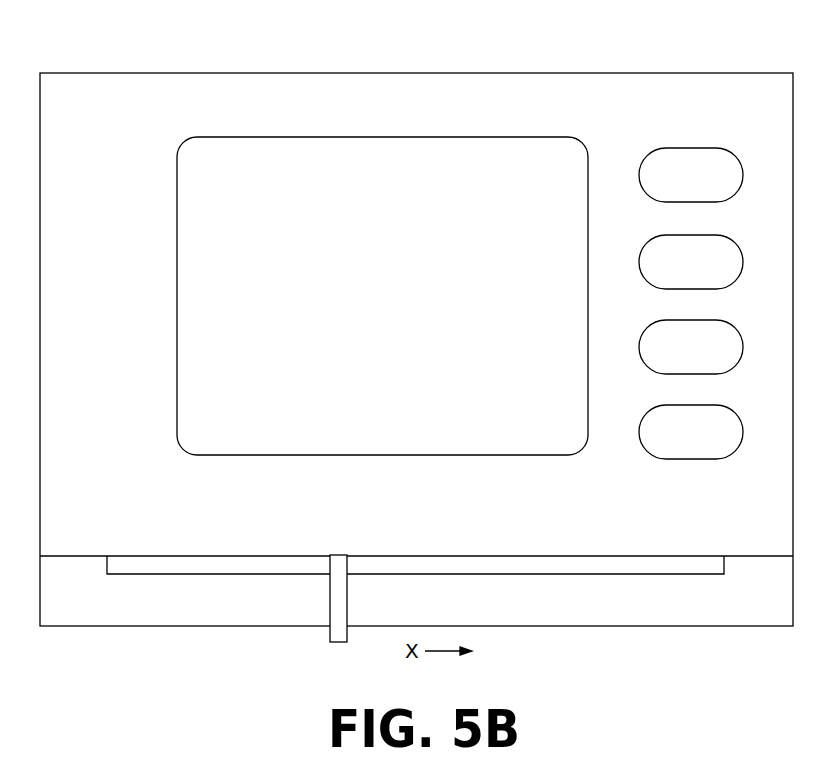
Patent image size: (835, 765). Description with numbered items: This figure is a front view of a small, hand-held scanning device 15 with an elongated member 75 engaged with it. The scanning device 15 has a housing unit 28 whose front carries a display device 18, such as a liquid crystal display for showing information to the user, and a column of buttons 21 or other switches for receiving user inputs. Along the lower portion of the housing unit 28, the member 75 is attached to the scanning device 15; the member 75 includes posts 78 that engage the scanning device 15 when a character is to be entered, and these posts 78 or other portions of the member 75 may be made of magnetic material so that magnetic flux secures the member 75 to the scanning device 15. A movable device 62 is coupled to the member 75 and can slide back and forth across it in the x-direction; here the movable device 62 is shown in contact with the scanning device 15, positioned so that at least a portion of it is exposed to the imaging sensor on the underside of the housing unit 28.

The scanning device 15 is at (660, 38).
The housing unit 28 is at (366, 73).
The display device 18 is at (383, 137).
The buttons 21 is at (692, 132).
The posts 78 is at (108, 563).
The movable device 62 is at (348, 560).
The elongated member 75 is at (448, 609).